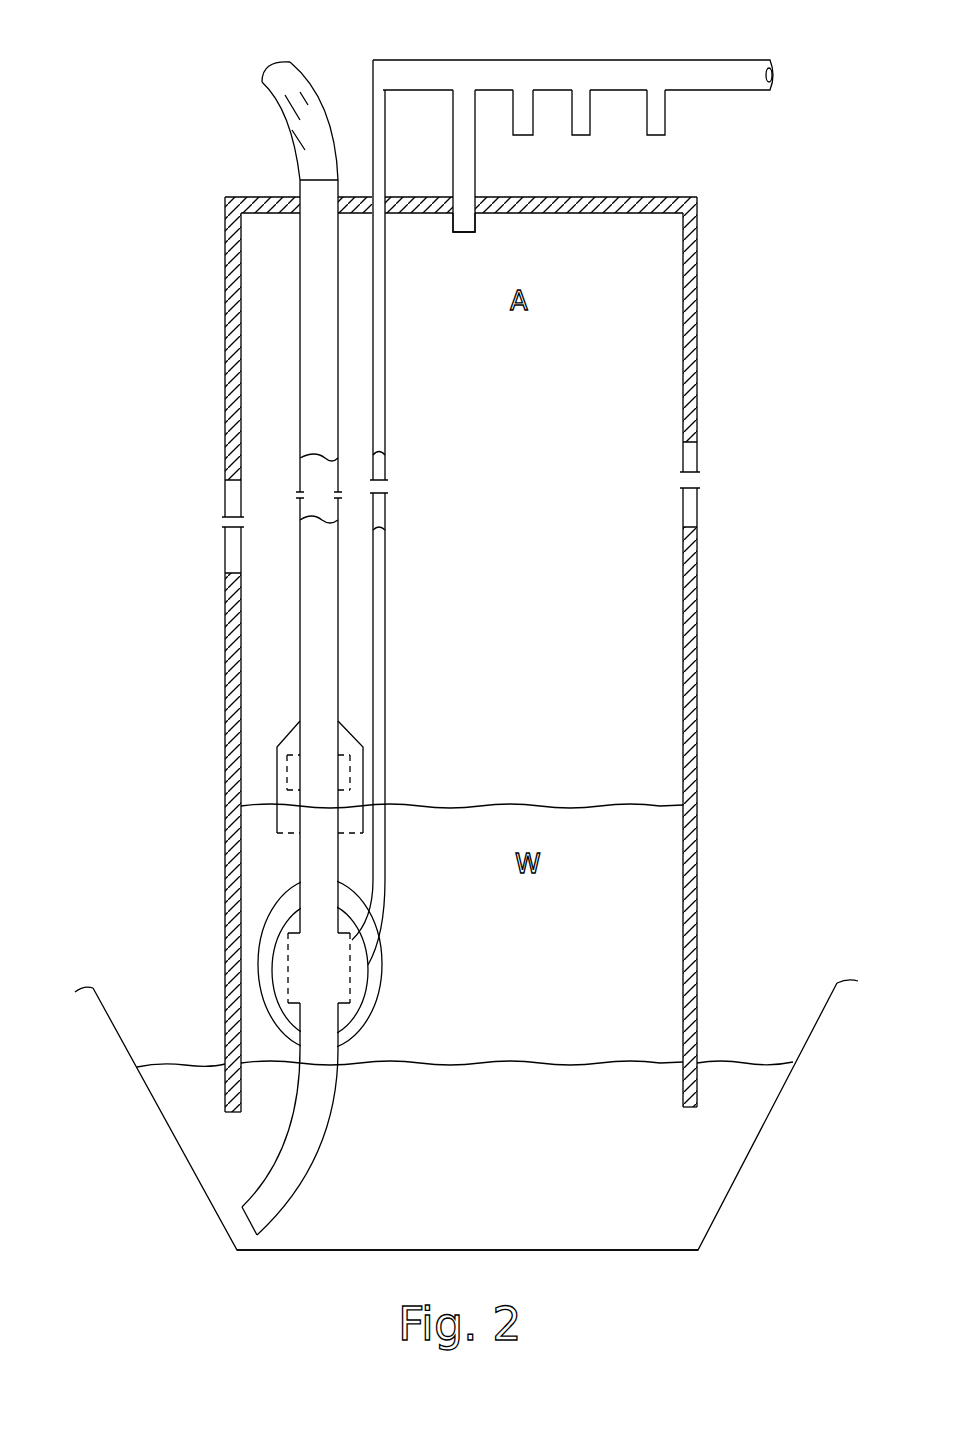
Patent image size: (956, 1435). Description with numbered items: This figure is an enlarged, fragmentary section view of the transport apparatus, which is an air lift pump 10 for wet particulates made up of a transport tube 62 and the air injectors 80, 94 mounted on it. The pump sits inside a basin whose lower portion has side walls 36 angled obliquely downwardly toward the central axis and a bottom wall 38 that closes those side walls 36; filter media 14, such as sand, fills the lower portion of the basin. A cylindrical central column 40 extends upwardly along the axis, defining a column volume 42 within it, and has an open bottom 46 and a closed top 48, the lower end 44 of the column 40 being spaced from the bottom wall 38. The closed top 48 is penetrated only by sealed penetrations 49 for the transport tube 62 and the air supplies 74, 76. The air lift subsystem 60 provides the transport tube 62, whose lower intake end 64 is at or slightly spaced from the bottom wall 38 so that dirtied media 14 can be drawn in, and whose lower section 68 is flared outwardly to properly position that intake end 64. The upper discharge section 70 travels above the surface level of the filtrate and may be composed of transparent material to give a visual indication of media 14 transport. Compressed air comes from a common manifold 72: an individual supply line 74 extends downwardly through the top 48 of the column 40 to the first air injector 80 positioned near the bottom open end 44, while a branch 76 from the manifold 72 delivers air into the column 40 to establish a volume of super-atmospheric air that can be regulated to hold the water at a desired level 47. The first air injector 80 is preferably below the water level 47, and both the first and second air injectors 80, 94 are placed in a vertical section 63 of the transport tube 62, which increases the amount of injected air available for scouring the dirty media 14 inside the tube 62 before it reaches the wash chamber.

The air lift pump 10 is at (200, 780).
The filter media 14 is at (522, 1194).
The side walls 36 is at (743, 1175).
The bottom wall 38 is at (642, 1250).
The central column 40 is at (697, 740).
The column volume 42 is at (536, 724).
The lower end of the column 44 is at (687, 1110).
The open bottom 46 is at (238, 1115).
The water level 47 is at (548, 805).
The closed top 48 is at (598, 197).
The sealed penetrations 49 is at (477, 198).
The air lift subsystem 60 is at (200, 588).
The transport tube 62 is at (300, 348).
The vertical section 63 is at (300, 858).
The lower intake end 64 is at (240, 1218).
The lower section 68 is at (303, 1185).
The upper discharge section 70 is at (306, 88).
The manifold 72 is at (548, 60).
The supply line 74 is at (385, 367).
The branch 76 is at (453, 152).
The first air injector 80 is at (382, 950).
The second air injector 94 is at (277, 746).